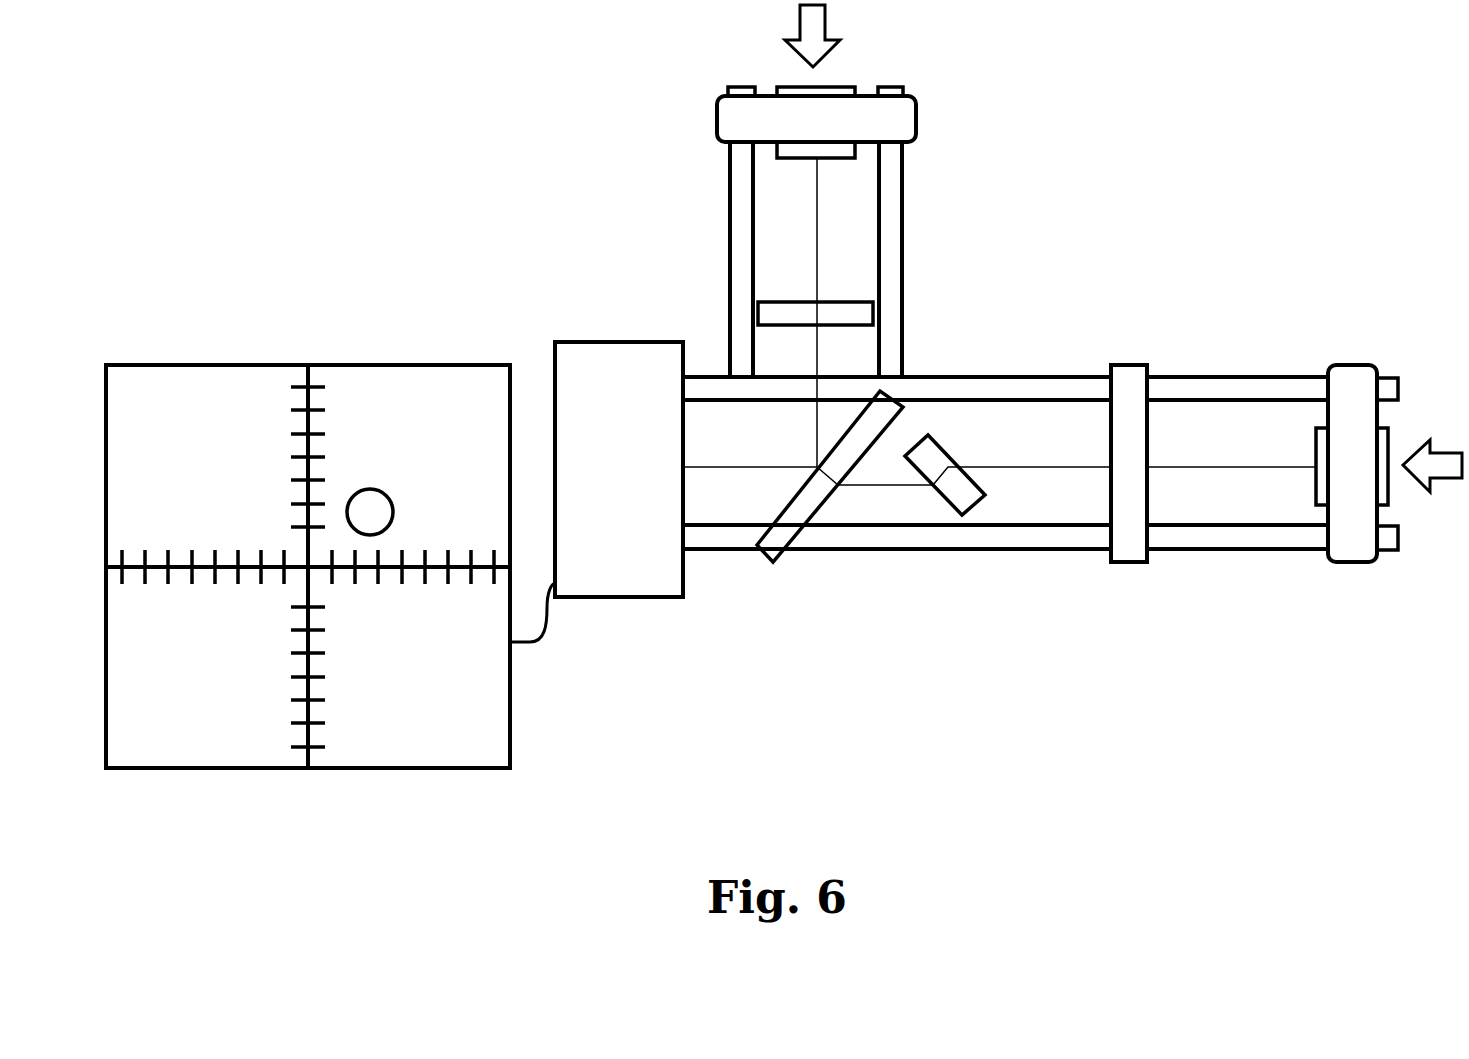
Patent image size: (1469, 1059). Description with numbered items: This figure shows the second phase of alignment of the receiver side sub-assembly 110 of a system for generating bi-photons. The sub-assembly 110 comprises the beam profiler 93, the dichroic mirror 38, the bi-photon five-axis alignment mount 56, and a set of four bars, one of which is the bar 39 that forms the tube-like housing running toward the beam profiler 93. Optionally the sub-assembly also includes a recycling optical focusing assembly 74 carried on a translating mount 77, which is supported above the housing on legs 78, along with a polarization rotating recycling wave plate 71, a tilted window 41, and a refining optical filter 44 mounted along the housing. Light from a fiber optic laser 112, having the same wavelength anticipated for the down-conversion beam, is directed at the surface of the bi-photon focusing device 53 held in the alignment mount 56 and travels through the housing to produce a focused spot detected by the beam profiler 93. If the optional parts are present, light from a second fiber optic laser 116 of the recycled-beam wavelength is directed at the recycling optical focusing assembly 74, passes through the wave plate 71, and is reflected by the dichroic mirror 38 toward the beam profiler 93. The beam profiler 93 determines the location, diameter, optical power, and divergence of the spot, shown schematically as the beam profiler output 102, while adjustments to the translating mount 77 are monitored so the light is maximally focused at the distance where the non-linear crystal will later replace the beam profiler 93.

The beam profiler output 102 is at (302, 785).
The beam profiler 93 is at (613, 632).
The receiver side sub-assembly 110 is at (1013, 431).
The bar 39 is at (867, 538).
The support legs 78 is at (893, 181).
The translating mount 77 is at (732, 118).
The recycling optical focusing assembly 74 is at (772, 153).
The polarization rotating recycling wave plate 71 is at (763, 295).
The fiber optic laser 116 is at (772, 42).
The dichroic mirror 38 is at (781, 537).
The tilted window 41 is at (960, 515).
The bi-photon focusing device 53 is at (1317, 513).
The refining optical filter 44 is at (1133, 572).
The bi-photon 5-axis alignment mount 56 is at (1352, 573).
The fiber optic laser 112 is at (1433, 503).